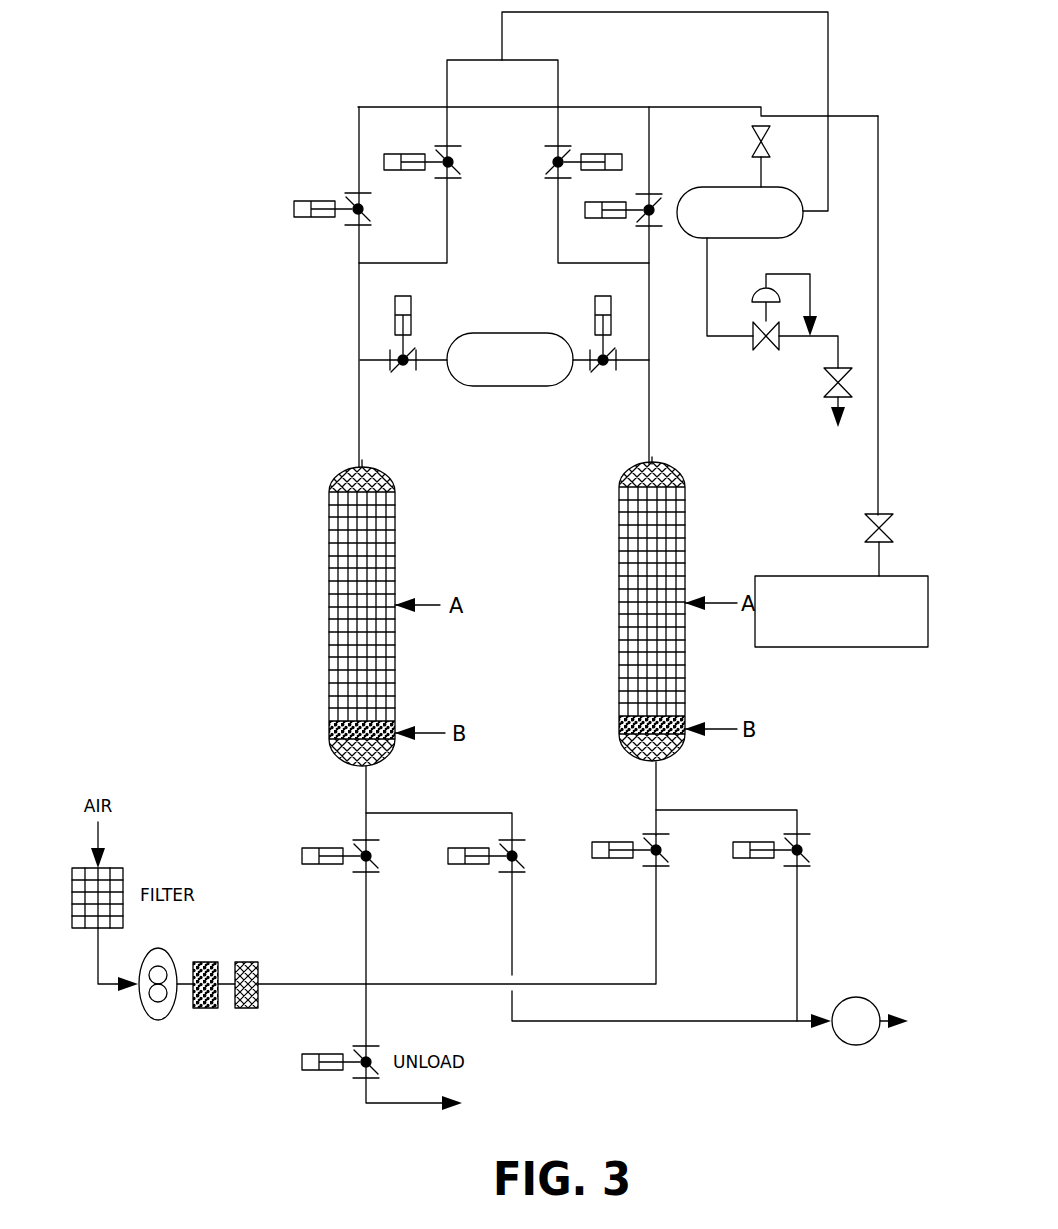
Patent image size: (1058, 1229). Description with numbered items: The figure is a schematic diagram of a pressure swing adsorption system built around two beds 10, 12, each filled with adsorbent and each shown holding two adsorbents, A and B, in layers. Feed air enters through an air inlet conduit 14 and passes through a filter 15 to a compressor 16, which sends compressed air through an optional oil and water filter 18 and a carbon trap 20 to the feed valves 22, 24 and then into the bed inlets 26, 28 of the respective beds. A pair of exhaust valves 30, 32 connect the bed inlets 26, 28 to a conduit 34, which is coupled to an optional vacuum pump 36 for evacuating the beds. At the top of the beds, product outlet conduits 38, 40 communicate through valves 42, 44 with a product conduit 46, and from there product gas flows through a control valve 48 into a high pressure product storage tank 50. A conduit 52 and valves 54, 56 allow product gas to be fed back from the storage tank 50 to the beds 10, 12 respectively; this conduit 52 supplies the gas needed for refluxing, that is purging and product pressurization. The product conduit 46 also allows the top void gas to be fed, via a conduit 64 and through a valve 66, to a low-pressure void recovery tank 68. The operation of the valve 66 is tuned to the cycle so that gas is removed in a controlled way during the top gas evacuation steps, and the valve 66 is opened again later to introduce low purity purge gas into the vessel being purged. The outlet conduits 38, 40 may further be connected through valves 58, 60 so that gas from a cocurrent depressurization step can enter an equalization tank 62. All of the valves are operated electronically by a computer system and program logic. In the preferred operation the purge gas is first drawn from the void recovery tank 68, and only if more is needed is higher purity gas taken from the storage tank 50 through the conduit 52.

The bed 10 is at (330, 508).
The bed 12 is at (619, 513).
The air inlet conduit 14 is at (98, 836).
The filter 15 is at (72, 895).
The compressor 16 is at (150, 1020).
The oil and water filter 18 is at (210, 1008).
The carbon trap 20 is at (250, 1008).
The feed valve 22 is at (375, 851).
The feed valve 24 is at (665, 845).
The bed inlet 26 is at (367, 784).
The bed inlet 28 is at (657, 778).
The exhaust valve 30 is at (521, 851).
The exhaust valve 32 is at (806, 845).
The conduit 34 is at (758, 1021).
The vacuum pump 36 is at (843, 1043).
The product outlet conduit 38 is at (360, 426).
The product outlet conduit 40 is at (649, 418).
The valve 42 is at (366, 206).
The valve 44 is at (641, 220).
The product conduit 46 is at (690, 107).
The control valve 48 is at (751, 144).
The high pressure product storage tank 50 is at (740, 212).
The conduit 52 is at (652, 13).
The valve 54 is at (456, 156).
The valve 56 is at (547, 160).
The valve 58 is at (405, 376).
The valve 60 is at (600, 376).
The equalization tank 62 is at (510, 359).
The conduit 64 is at (879, 268).
The valve 66 is at (893, 528).
The void recovery tank 68 is at (808, 648).